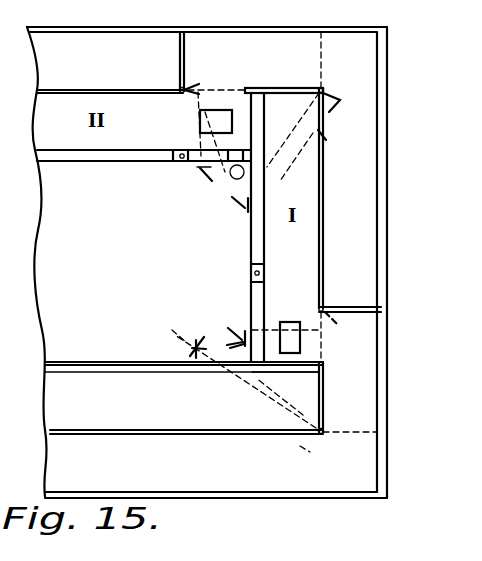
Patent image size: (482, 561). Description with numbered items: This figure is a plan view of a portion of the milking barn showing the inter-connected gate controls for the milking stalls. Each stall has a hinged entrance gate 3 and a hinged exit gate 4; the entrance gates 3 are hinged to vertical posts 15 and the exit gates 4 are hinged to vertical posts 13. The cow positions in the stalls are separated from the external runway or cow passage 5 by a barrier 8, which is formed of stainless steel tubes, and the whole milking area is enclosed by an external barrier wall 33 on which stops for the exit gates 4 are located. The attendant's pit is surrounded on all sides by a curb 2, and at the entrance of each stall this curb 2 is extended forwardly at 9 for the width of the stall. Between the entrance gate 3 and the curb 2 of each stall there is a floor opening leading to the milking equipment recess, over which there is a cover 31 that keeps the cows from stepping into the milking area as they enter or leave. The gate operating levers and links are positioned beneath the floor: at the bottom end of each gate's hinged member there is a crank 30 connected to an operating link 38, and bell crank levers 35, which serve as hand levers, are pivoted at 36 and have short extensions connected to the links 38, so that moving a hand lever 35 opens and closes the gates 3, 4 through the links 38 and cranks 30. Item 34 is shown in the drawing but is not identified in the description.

The curb 2 is at (172, 162).
The hinged entrance gate 3 is at (365, 306).
The hinged exit gate 4 is at (293, 83).
The external runway 5 is at (180, 44).
The barrier 8 is at (97, 83).
The forward extension of curb 9 is at (271, 135).
The hinge post 13 is at (325, 305).
The hinge post 15 is at (180, 88).
The crank 30 is at (197, 87).
The cover 31 is at (200, 122).
The external barrier wall 33 is at (212, 20).
The latch bracket 34 is at (181, 162).
The bell crank lever 35 is at (232, 201).
The pivot 36 is at (190, 89).
The operating link 38 is at (323, 135).